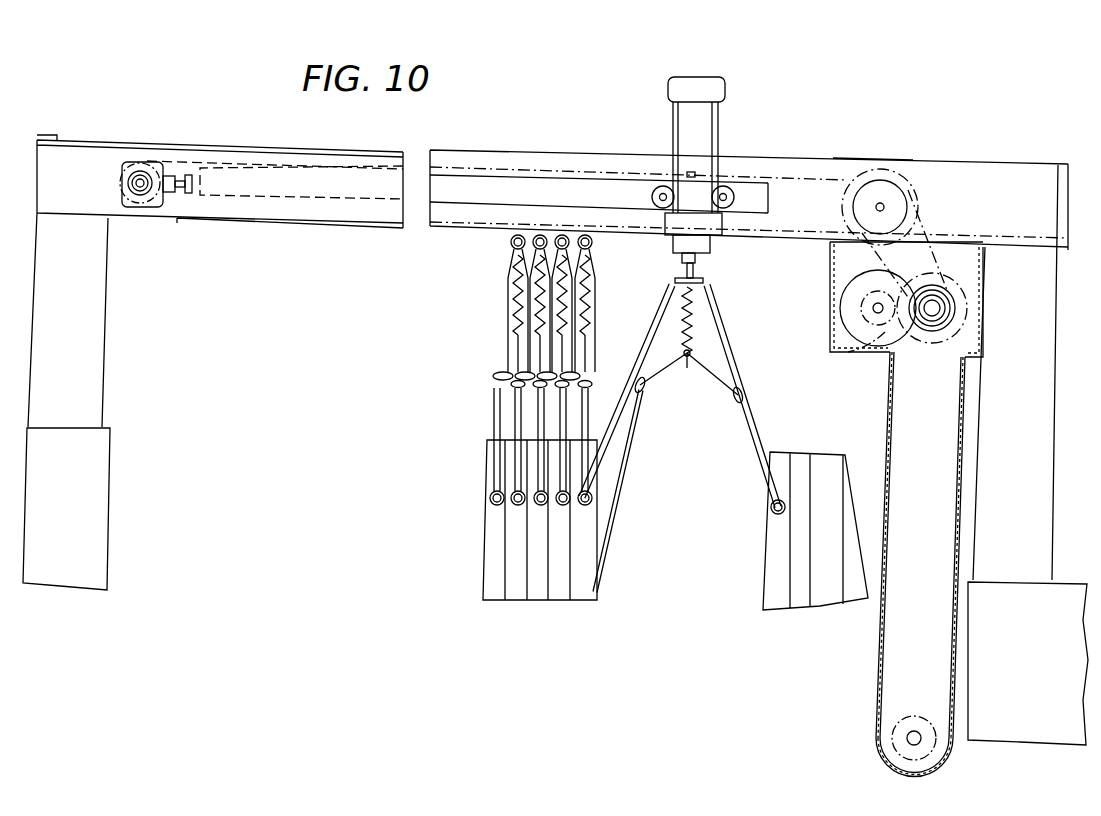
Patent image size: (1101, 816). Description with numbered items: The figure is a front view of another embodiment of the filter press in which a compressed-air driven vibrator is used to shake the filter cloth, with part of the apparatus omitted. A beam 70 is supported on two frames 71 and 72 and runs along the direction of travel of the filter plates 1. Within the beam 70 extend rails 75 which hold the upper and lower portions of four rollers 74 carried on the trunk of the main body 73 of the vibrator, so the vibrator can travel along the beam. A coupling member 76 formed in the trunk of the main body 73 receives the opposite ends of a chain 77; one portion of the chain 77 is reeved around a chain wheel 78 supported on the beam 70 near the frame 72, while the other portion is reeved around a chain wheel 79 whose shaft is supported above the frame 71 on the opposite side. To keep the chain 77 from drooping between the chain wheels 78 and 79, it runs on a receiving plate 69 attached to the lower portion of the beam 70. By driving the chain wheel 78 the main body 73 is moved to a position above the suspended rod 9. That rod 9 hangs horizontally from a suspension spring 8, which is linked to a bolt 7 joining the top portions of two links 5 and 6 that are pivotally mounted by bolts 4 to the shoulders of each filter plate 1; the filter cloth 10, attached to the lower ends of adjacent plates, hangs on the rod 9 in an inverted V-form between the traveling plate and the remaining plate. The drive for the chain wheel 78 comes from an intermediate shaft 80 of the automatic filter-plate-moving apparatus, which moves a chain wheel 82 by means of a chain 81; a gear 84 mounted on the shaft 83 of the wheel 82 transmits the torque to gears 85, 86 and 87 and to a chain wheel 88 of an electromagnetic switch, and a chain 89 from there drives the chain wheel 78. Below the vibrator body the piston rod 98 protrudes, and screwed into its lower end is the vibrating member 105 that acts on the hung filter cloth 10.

The filter plate 1 is at (597, 593).
The bolt 4 is at (600, 504).
The link 5 is at (756, 420).
The link 6 is at (636, 356).
The bolt 7 is at (592, 242).
The suspension spring 8 is at (592, 300).
The rod 9 is at (689, 376).
The filter cloth 10 is at (636, 440).
The receiving plate 69 is at (360, 228).
The beam 70 is at (95, 142).
The frame 71 is at (86, 290).
The frame 72 is at (1038, 453).
The main body of the vibrator 73 is at (718, 112).
The roller 74 is at (663, 188).
The rail 75 is at (600, 183).
The coupling member 76 is at (697, 174).
The chain 77 is at (318, 165).
The chain wheel 78 is at (897, 192).
The chain wheel 79 is at (142, 163).
The intermediate shaft 80 is at (935, 745).
The chain 81 is at (880, 666).
The chain wheel 82 is at (975, 300).
The shaft 83 is at (945, 310).
The gear 84 is at (965, 340).
The gear 85 is at (850, 284).
The gear 86 is at (860, 309).
The gear 87 is at (868, 342).
The chain wheel 88 is at (905, 356).
The chain 89 is at (925, 235).
The piston rod 98 is at (685, 268).
The vibrating member 105 is at (705, 280).